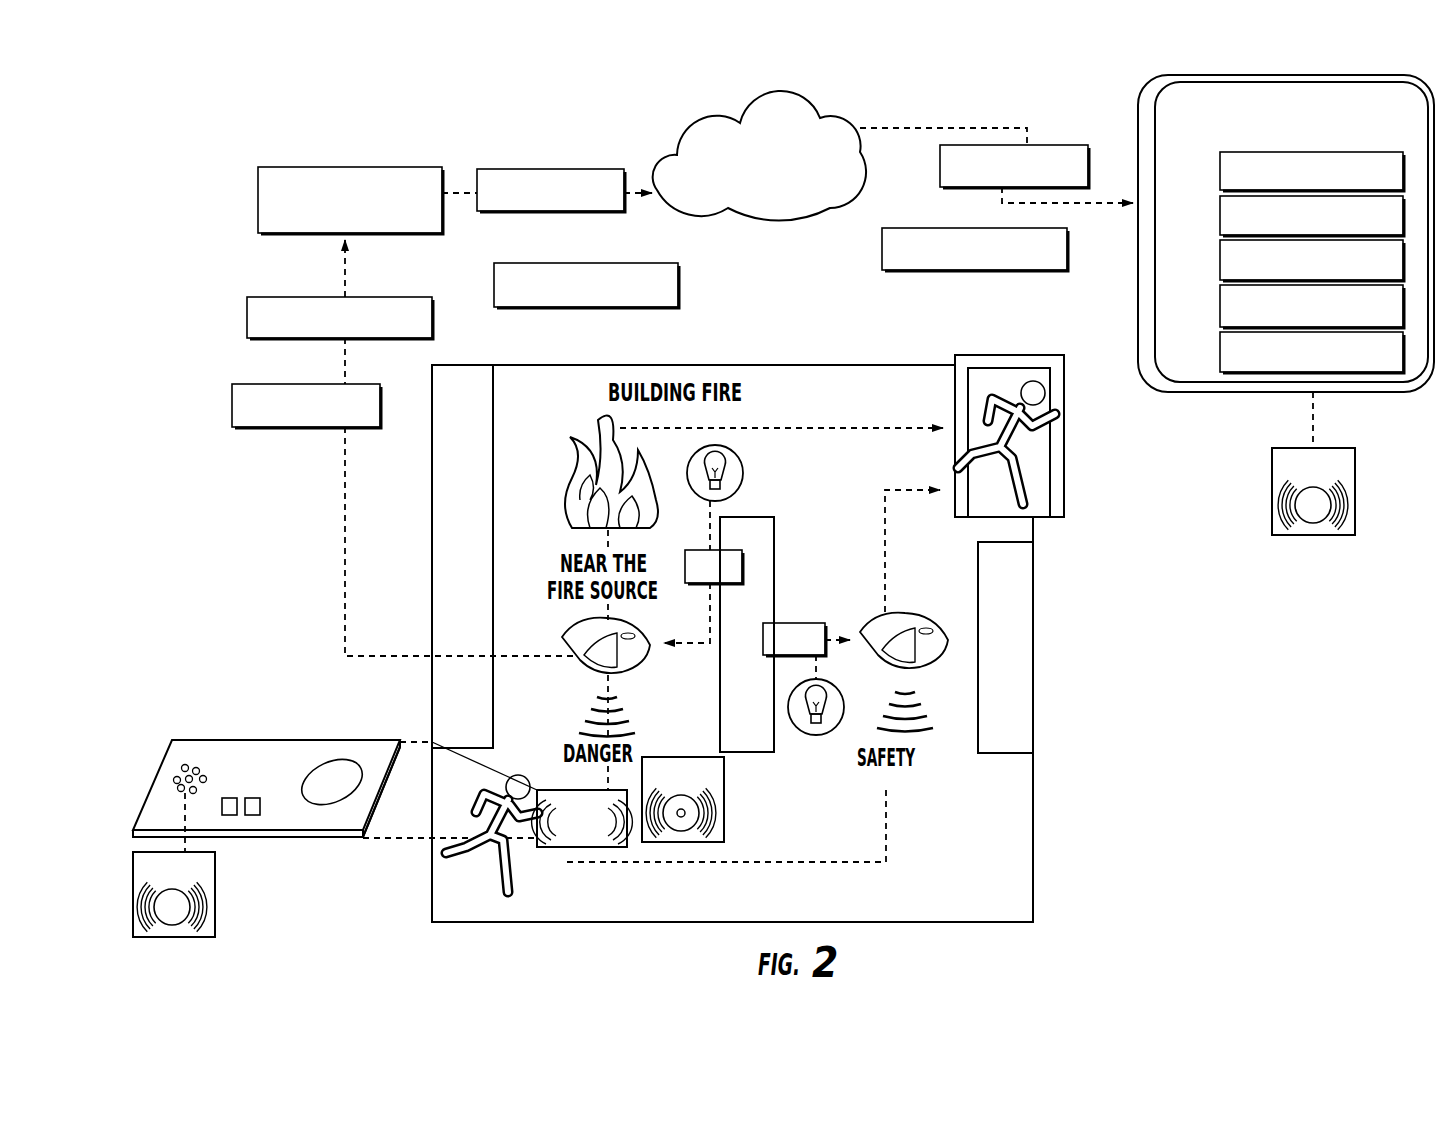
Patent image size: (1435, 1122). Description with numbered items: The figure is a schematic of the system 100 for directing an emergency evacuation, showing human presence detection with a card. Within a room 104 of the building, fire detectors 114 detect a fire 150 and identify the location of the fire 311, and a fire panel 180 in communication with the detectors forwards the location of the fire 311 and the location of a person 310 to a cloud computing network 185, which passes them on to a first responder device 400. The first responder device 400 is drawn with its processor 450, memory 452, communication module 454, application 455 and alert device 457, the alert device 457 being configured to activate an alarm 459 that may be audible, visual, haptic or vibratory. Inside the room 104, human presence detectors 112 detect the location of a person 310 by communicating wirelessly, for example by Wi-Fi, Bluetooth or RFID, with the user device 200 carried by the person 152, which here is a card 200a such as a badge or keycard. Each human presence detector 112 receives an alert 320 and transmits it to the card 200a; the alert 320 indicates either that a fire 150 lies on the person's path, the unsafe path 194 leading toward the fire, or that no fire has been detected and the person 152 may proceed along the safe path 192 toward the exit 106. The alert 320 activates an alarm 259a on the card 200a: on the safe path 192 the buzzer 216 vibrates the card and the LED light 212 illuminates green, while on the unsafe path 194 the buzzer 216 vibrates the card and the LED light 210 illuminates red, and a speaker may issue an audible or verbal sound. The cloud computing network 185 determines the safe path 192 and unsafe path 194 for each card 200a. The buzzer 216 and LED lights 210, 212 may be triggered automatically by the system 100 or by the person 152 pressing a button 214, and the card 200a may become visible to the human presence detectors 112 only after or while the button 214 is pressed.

The system 100 is at (222, 157).
The room 104 is at (1005, 808).
The exit 106 is at (1082, 435).
The human presence detector 112 is at (565, 645).
The fire detector 114 is at (743, 487).
The fire 150 is at (570, 460).
The person 152 is at (493, 792).
The fire panel 180 is at (445, 178).
The cloud computing network 185 is at (850, 125).
The safe path 192 is at (888, 843).
The unsafe path 194 is at (592, 693).
The user device 200 is at (382, 800).
The card 200a is at (345, 838).
The LED light 210 is at (230, 797).
The LED light 212 is at (252, 797).
The button 214 is at (323, 762).
The buzzer 216 is at (184, 764).
The alarm 259a is at (132, 888).
The location of a person 310 is at (567, 212).
The location of the fire 311 is at (580, 308).
The alert 320 is at (687, 570).
The first responder device 400 is at (1137, 136).
The processor 450 is at (1220, 220).
The memory 452 is at (1220, 175).
The communication module 454 is at (1220, 265).
The application 455 is at (1220, 311).
The alert device 457 is at (1220, 356).
The alarm 459 is at (1270, 493).